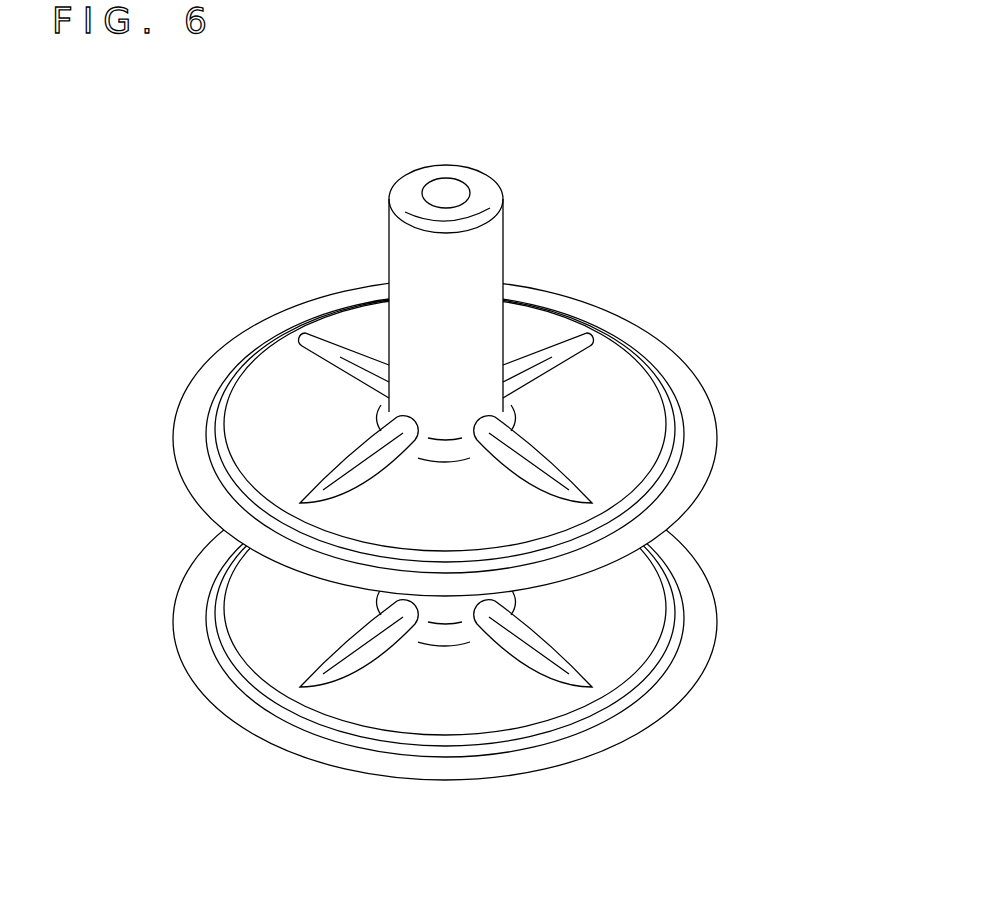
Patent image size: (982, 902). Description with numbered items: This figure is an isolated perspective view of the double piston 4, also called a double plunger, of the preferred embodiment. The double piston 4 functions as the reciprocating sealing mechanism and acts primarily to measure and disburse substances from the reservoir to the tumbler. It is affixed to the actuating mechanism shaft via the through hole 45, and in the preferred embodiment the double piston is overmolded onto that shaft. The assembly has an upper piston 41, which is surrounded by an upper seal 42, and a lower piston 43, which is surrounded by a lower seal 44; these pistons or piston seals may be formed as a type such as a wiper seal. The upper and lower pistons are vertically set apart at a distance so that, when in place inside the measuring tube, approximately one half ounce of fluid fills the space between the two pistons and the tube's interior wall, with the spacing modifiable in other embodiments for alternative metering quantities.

The double piston 4 is at (197, 167).
The upper piston 41 is at (270, 407).
The upper seal 42 is at (193, 441).
The lower piston 43 is at (640, 625).
The lower seal 44 is at (667, 693).
The through hole 45 is at (452, 192).